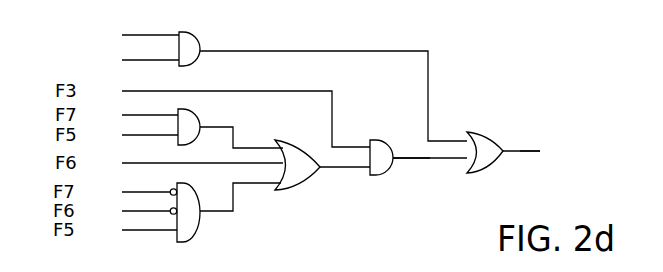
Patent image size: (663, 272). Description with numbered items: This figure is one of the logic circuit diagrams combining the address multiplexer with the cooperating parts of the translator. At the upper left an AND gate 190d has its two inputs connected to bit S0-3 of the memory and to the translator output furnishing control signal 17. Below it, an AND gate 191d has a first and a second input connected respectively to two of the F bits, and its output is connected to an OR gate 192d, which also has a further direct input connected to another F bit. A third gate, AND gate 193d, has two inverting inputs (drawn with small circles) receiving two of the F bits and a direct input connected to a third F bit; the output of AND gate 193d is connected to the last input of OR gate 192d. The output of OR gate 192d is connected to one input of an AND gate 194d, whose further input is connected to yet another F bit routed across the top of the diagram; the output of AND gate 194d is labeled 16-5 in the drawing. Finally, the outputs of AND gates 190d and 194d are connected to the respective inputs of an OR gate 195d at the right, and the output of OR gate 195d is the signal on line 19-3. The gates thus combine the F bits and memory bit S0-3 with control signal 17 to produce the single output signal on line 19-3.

The AND gate 190d is at (188, 45).
The AND gate 191d is at (188, 122).
The OR gate 192d is at (294, 152).
The AND gate 193d is at (188, 223).
The AND gate 194d is at (378, 147).
The OR gate 195d is at (485, 143).
The output line 16-5 is at (415, 175).
The line 19-3 is at (569, 151).
The bit of memory S0-3 is at (117, 34).
The control signal 17 is at (118, 59).